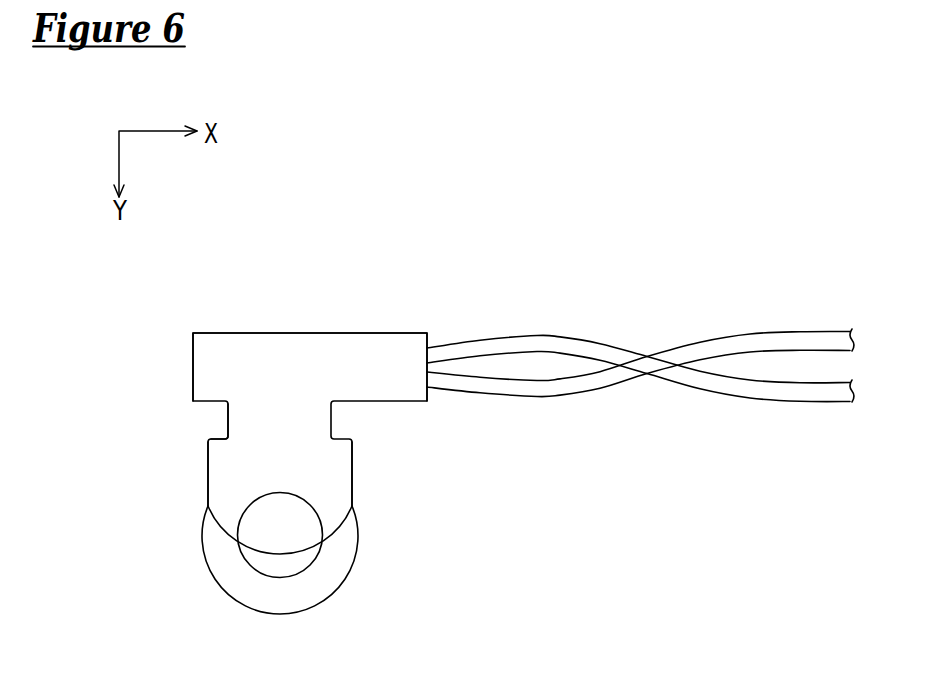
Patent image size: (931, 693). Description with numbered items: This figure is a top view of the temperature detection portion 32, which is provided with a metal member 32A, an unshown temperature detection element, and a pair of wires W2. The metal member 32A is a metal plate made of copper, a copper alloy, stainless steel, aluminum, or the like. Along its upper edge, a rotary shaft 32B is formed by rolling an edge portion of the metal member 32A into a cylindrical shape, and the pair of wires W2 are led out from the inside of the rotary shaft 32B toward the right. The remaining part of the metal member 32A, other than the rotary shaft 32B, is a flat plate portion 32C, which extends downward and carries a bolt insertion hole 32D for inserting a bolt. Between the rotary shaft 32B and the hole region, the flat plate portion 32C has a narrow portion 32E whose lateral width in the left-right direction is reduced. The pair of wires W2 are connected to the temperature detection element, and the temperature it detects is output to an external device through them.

The temperature detection portion 32 is at (442, 313).
The metal member 32A is at (208, 488).
The rotary shaft 32B is at (217, 357).
The flat plate portion 32C is at (333, 468).
The bolt insertion hole 32D is at (295, 550).
The narrow portion 32E is at (228, 422).
The pair of wires W2 is at (765, 332).